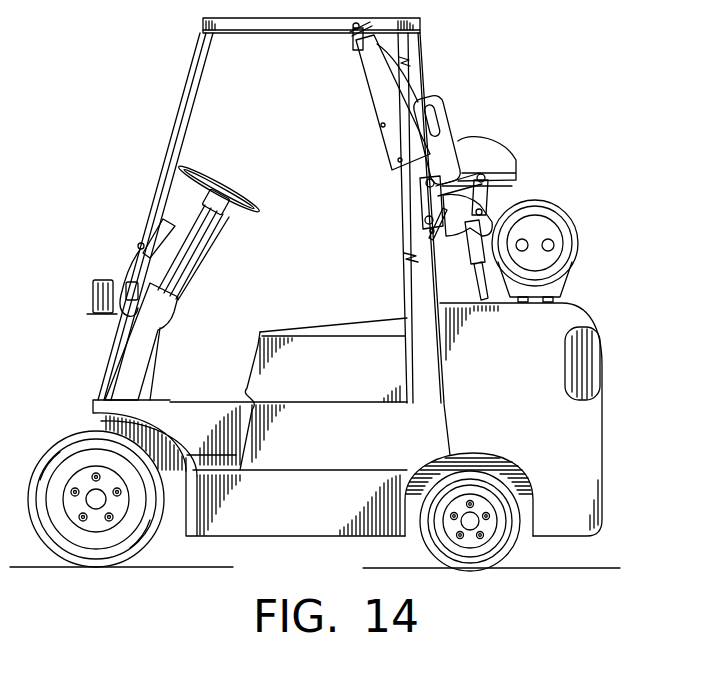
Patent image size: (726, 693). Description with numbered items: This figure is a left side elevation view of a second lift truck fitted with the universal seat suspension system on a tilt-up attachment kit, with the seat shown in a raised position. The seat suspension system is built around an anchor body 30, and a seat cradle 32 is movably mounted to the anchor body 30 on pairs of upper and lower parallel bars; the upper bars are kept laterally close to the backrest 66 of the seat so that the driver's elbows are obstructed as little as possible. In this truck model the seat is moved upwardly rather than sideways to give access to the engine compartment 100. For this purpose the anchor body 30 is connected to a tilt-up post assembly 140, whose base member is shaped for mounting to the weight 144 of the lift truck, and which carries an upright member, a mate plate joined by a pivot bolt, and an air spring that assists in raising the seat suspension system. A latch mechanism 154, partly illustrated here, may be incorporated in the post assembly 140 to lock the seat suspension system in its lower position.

The anchor body 30 is at (410, 212).
The seat cradle 32 is at (372, 108).
The backrest 66 is at (478, 152).
The engine compartment 100 is at (347, 320).
The tilt-up post assembly 140 is at (506, 200).
The weight 144 is at (557, 322).
The latch mechanism 154 is at (395, 233).